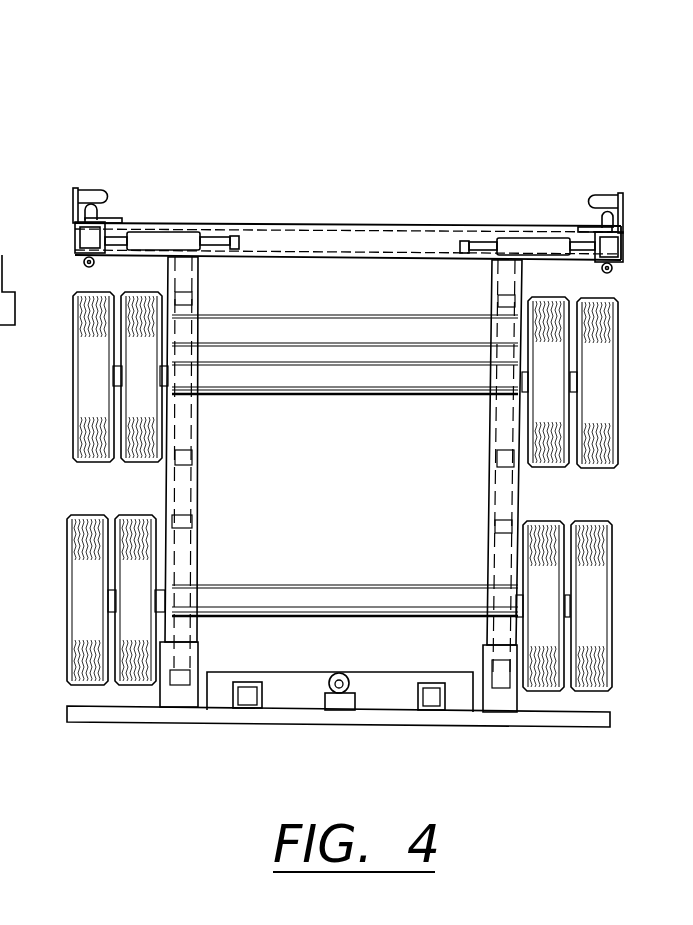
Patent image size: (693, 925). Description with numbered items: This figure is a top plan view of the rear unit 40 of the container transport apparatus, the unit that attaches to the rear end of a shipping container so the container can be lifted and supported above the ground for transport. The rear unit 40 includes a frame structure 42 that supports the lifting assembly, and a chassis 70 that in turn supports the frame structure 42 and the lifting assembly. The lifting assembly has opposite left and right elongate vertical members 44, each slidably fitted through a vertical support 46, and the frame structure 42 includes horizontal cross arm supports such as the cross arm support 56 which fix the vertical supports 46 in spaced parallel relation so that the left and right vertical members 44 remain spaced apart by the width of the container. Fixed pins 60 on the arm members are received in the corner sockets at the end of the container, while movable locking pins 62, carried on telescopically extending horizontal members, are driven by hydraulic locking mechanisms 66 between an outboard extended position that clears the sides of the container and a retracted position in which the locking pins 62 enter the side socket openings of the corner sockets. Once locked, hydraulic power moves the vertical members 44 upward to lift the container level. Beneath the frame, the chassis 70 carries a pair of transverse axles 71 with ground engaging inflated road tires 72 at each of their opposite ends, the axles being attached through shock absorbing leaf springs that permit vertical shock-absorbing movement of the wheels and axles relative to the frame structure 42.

The rear unit 40 is at (405, 167).
The frame structure 42 is at (344, 258).
The elongate vertical member 44 is at (122, 222).
The vertical support 46 is at (73, 233).
The lower horizontal cross arm support 56 is at (315, 248).
The fixed pin 60 is at (95, 218).
The movable locking pin 62 is at (100, 190).
The hydraulic locking mechanism 66 is at (174, 226).
The chassis 70 is at (274, 392).
The transverse axle 71 is at (376, 380).
The road tire 72 is at (98, 294).